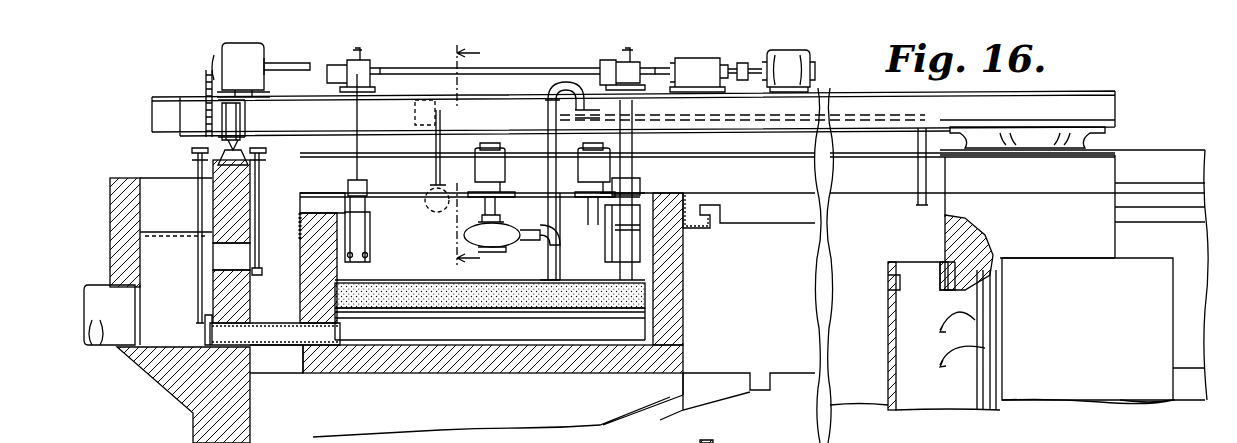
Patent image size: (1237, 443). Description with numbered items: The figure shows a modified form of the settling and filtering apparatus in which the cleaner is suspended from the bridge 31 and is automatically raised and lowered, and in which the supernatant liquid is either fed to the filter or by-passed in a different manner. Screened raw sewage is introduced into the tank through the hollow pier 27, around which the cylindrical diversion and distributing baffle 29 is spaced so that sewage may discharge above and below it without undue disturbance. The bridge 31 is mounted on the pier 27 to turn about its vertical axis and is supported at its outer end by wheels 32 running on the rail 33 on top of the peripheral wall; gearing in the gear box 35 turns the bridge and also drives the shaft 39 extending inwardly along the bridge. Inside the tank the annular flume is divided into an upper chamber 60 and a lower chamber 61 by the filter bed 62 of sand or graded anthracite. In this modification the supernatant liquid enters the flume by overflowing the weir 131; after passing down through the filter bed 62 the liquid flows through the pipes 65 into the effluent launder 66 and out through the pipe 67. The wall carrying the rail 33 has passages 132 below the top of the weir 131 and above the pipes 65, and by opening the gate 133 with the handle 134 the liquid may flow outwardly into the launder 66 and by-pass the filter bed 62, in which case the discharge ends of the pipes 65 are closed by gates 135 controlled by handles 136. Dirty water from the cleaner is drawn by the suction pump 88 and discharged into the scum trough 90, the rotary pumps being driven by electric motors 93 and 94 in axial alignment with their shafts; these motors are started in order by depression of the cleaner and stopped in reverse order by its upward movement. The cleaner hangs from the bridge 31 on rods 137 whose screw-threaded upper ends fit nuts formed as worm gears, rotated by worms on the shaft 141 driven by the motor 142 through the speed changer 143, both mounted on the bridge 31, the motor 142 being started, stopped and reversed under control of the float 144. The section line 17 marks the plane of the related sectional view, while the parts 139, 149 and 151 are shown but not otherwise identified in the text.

The section line 17- 17 is at (480, 157).
The hollow support or pier 27 is at (945, 240).
The cylindrical diversion and distributing baffle 29 is at (888, 318).
The bridge 31 is at (1006, 94).
The wheels 32 is at (245, 128).
The rail 33 is at (222, 143).
The gear box 35 is at (255, 57).
The shaft 39 is at (305, 63).
The upper chamber 60 is at (655, 196).
The lower chamber 61 is at (585, 345).
The filter bed 62 is at (535, 305).
The conduits or pipes 65 is at (275, 345).
The effluent channel or launder 66 is at (148, 218).
The pipe 67 is at (92, 345).
The suction pump 88 is at (505, 240).
The scum trough 90 is at (700, 200).
The electric motor 93 is at (582, 166).
The electric motor 94 is at (500, 160).
The wall or weir 131 is at (298, 212).
The passages 132 is at (250, 283).
The gate 133 is at (260, 248).
The handle 134 is at (262, 153).
The gates 135 is at (208, 336).
The handles 136 is at (196, 160).
The rods 137 is at (632, 162).
The clamp 139 is at (350, 182).
The shaft 141 is at (535, 68).
The motor 142 is at (797, 57).
The speed changer 143 is at (683, 60).
The float 144 is at (446, 192).
The plate 149 is at (1125, 442).
The pad 151 is at (698, 442).